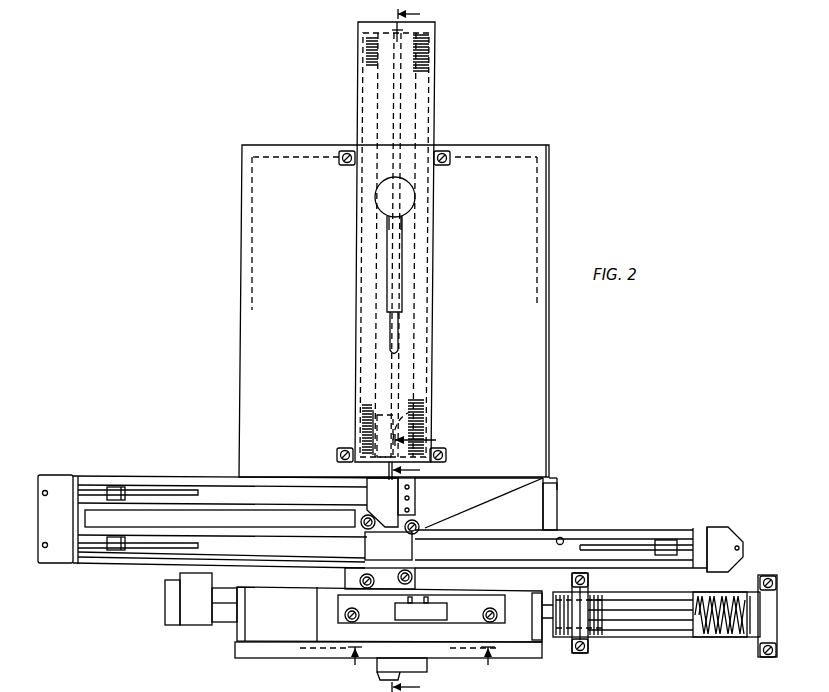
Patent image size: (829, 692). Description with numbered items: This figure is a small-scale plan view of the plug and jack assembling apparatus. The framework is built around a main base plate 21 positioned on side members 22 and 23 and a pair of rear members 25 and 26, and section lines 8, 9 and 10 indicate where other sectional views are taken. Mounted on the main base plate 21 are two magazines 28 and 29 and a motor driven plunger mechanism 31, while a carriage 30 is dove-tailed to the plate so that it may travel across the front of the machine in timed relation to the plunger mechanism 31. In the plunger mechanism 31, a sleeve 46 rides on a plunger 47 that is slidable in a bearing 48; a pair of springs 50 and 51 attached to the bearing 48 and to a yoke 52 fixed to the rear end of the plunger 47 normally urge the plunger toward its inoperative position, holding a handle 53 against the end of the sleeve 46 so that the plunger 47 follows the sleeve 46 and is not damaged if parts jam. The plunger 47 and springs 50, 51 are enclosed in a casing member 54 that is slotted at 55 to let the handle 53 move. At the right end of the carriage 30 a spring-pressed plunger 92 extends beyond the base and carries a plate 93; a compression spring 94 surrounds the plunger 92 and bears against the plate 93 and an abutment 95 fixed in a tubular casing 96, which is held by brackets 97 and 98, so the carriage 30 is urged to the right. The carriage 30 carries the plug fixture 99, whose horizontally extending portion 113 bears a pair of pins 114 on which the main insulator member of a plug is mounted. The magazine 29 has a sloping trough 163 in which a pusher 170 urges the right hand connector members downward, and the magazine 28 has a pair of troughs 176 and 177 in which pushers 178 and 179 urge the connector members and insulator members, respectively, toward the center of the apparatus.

The section line 8- 8 is at (412, 251).
The section line 9- 9 is at (421, 562).
The section line 10- 10 is at (420, 665).
The main base plate 21 is at (520, 235).
The side member 22 is at (549, 200).
The side member 23 is at (243, 188).
The rear member 25 is at (270, 156).
The rear member 26 is at (498, 157).
The magazine 28 is at (159, 470).
The magazine 29 is at (691, 522).
The carriage 30 is at (325, 622).
The plunger mechanism 31 is at (438, 365).
The sleeve 46 is at (390, 272).
The plunger 47 is at (393, 336).
The bearing 48 is at (405, 412).
The spring 50 is at (430, 424).
The spring 51 is at (357, 430).
The yoke 52 is at (432, 35).
The handle 53 is at (387, 193).
The casing member 54 is at (434, 286).
The slot 55 is at (398, 244).
The spring-pressed plunger 92 is at (540, 605).
The plate 93 is at (745, 638).
The compression spring 94 is at (605, 613).
The abutment 95 is at (552, 637).
The tubular casing 96 is at (650, 640).
The bracket 97 is at (590, 584).
The bracket 98 is at (765, 590).
The plug fixture 99 is at (464, 590).
The horizontally extending portion 113 is at (402, 612).
The pins 114 is at (418, 600).
The trough 163 is at (564, 538).
The pusher 170 is at (650, 542).
The trough 176 is at (143, 556).
The trough 177 is at (188, 486).
The pusher 178 is at (123, 553).
The pusher 179 is at (125, 487).